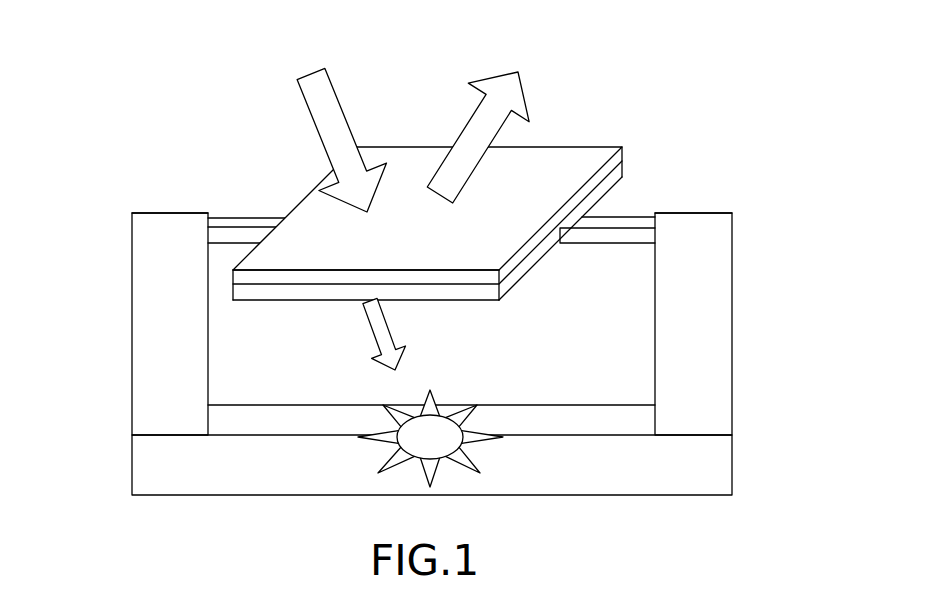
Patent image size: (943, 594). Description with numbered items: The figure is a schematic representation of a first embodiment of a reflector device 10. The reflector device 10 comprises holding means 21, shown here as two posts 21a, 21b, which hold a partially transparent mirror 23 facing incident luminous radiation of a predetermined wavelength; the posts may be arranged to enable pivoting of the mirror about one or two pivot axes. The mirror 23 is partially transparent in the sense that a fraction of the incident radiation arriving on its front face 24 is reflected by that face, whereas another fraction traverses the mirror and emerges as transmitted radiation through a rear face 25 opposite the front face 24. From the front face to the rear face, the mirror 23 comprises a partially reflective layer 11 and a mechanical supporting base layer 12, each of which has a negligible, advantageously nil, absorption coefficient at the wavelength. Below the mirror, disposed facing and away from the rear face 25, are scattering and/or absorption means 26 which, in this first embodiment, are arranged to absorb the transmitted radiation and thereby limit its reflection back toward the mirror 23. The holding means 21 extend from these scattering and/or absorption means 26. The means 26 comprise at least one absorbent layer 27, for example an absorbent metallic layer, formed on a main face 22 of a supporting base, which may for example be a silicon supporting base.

The reflector device 10 is at (155, 139).
The partially reflective layer 11 is at (402, 173).
The mechanical supporting base layer 12 is at (478, 302).
The holding means 21 is at (165, 253).
The post 21a is at (148, 413).
The post 21b is at (718, 412).
The main face 22 is at (627, 433).
The partially transparent mirror 23 is at (316, 205).
The front face 24 is at (544, 198).
The rear face 25 is at (501, 302).
The scattering and/or absorption means 26 is at (148, 467).
The absorbent layer 27 is at (270, 422).